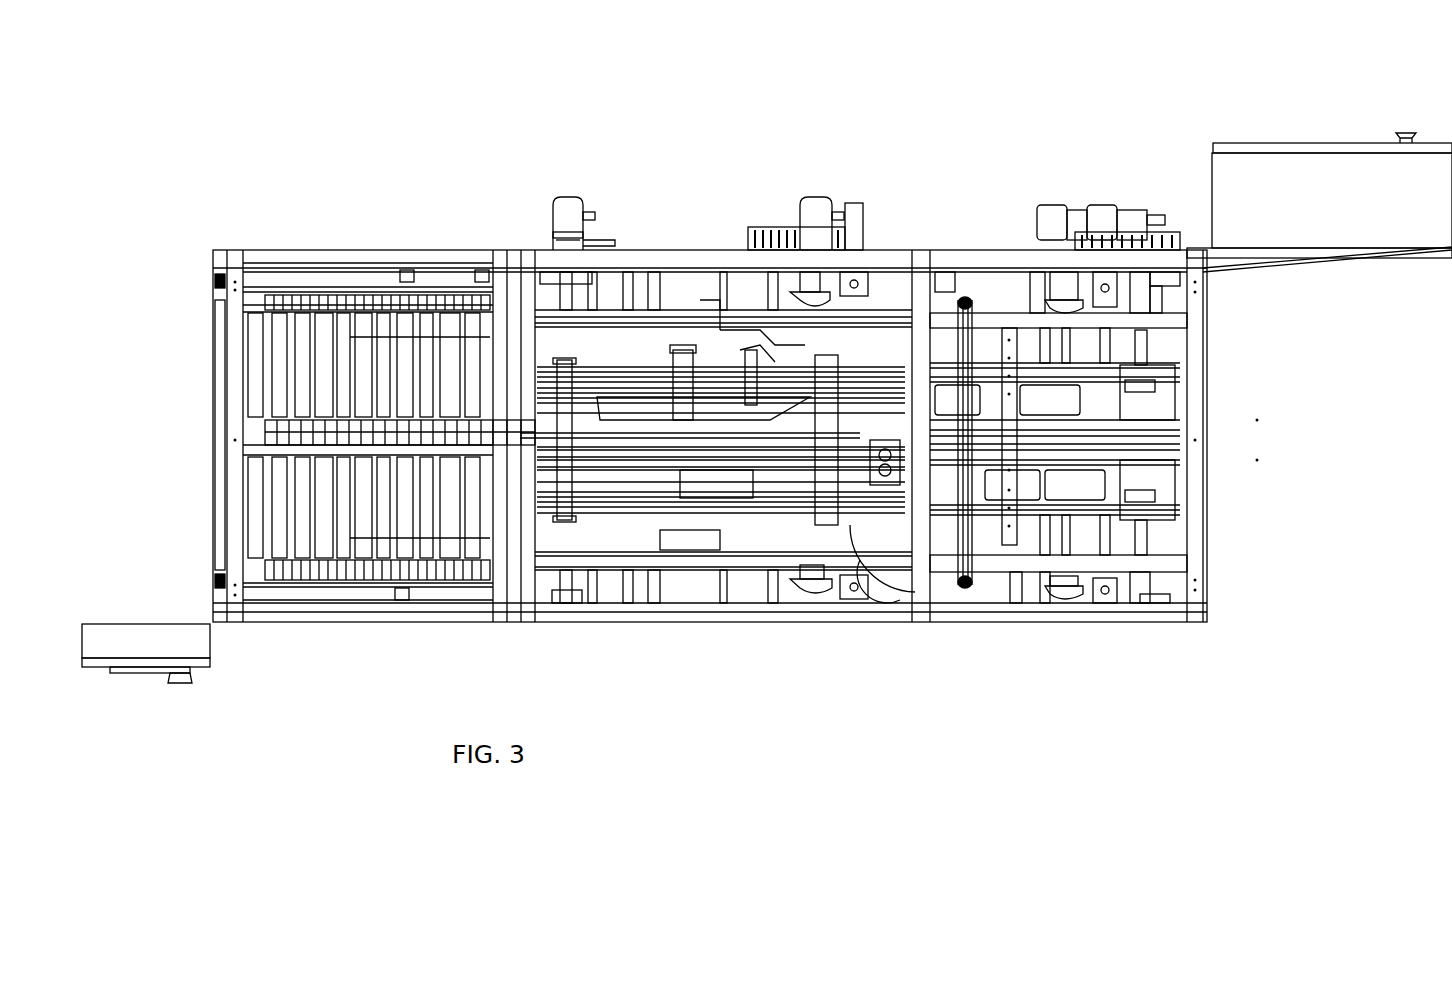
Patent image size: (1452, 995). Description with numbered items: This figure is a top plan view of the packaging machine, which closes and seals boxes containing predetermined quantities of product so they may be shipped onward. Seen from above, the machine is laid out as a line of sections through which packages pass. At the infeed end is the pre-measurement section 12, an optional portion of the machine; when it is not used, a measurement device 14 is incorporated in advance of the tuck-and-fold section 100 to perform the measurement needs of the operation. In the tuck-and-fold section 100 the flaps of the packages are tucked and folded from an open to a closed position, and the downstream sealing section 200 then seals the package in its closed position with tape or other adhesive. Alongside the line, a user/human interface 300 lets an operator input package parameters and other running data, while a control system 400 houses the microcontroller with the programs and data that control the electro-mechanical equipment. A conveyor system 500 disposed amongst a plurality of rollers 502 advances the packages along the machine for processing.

The pre-measurement section 12 is at (316, 457).
The measurement device 14 is at (437, 222).
The tuck-and-fold section 100 is at (708, 647).
The sealing section 200 is at (1020, 647).
The user/human interface 300 is at (113, 636).
The control system 400 is at (1305, 203).
The conveyor system 500 is at (263, 426).
The rollers 502 is at (302, 337).